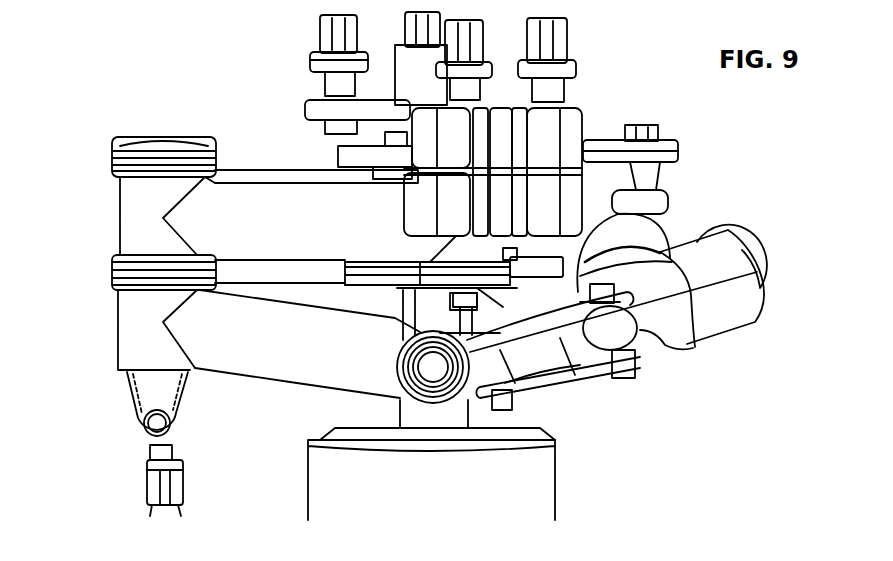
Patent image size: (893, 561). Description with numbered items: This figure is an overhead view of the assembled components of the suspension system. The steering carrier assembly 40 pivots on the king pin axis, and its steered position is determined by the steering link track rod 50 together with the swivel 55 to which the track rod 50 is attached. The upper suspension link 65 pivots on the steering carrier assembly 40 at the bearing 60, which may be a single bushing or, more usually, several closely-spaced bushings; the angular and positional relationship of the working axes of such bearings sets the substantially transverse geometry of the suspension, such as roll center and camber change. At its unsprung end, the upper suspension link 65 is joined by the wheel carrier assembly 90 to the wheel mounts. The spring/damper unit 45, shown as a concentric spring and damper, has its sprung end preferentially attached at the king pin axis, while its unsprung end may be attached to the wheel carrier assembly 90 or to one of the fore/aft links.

The steering carrier assembly 40 is at (252, 360).
The spring/damper unit 45 is at (762, 300).
The steering link track rod 50 is at (186, 508).
The swivel 55 is at (138, 418).
The bearing 60 is at (128, 205).
The upper suspension link 65 is at (248, 198).
The wheel carrier assembly 90 is at (576, 108).